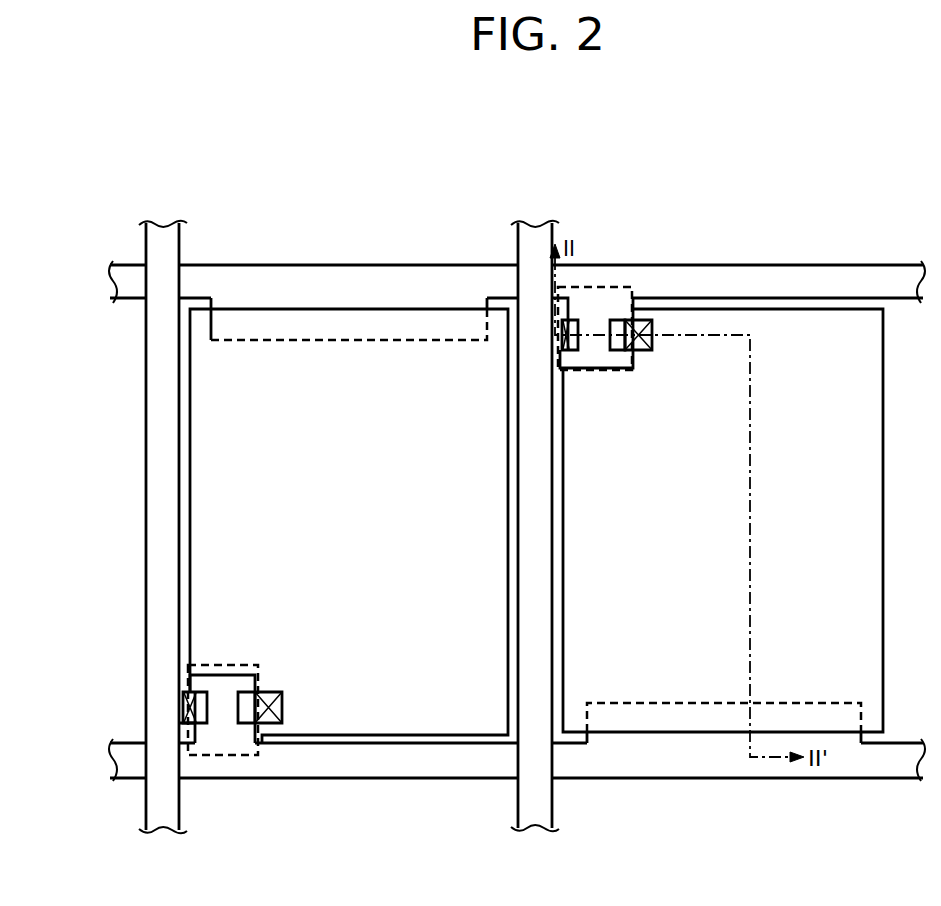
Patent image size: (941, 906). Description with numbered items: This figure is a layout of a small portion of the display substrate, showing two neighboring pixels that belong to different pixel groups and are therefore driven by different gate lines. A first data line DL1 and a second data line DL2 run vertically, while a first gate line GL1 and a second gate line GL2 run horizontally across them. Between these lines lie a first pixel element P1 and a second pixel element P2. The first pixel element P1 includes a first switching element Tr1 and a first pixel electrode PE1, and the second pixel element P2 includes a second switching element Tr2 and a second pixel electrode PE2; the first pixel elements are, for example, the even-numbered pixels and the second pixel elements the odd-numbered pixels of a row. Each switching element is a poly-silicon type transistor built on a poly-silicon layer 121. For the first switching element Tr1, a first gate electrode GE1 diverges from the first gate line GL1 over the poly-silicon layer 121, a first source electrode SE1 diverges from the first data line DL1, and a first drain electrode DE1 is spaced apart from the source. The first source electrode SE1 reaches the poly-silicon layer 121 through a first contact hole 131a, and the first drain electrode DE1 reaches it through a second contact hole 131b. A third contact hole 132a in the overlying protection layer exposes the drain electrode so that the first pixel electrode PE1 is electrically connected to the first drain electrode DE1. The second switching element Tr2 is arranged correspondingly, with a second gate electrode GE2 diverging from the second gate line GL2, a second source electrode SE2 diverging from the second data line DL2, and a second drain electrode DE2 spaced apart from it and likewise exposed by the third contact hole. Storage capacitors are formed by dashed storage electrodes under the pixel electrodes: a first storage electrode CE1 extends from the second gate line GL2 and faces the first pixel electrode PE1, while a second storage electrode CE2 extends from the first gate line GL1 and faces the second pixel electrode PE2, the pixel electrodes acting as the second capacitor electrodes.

The first data line DL1 is at (163, 512).
The second data line DL2 is at (535, 511).
The first gate line GL1 is at (496, 300).
The second gate line GL2 is at (496, 756).
The first storage electrode CE1 is at (722, 703).
The second storage electrode CE2 is at (348, 340).
The first pixel electrode PE1 is at (563, 543).
The second pixel electrode PE2 is at (190, 497).
The first pixel element P1 is at (672, 475).
The second pixel element P2 is at (300, 488).
The first switching element Tr1 is at (718, 453).
The second switching element Tr2 is at (348, 588).
The first source electrode SE1 is at (570, 370).
The first gate electrode GE1 is at (598, 370).
The first drain electrode DE1 is at (636, 372).
The second source electrode SE2 is at (195, 675).
The second gate electrode GE2 is at (223, 670).
The second drain electrode DE2 is at (270, 670).
The poly-silicon layer 121 is at (222, 755).
The first contact hole 131a is at (578, 327).
The second contact hole 131b is at (620, 317).
The third contact hole 132a is at (653, 328).